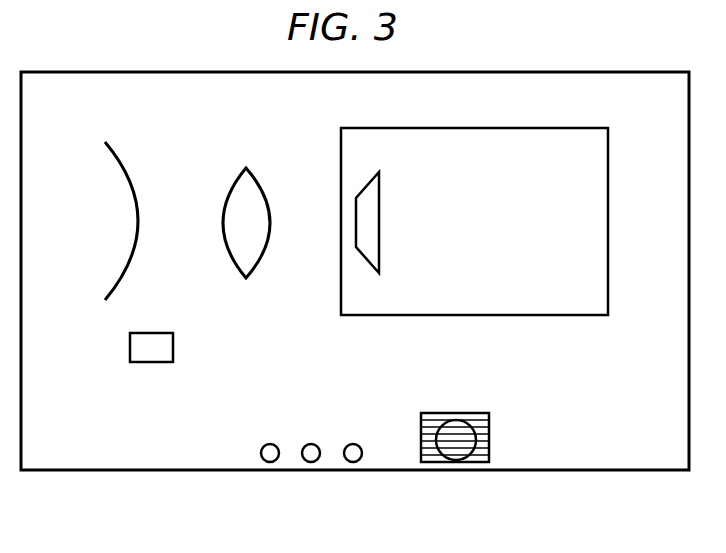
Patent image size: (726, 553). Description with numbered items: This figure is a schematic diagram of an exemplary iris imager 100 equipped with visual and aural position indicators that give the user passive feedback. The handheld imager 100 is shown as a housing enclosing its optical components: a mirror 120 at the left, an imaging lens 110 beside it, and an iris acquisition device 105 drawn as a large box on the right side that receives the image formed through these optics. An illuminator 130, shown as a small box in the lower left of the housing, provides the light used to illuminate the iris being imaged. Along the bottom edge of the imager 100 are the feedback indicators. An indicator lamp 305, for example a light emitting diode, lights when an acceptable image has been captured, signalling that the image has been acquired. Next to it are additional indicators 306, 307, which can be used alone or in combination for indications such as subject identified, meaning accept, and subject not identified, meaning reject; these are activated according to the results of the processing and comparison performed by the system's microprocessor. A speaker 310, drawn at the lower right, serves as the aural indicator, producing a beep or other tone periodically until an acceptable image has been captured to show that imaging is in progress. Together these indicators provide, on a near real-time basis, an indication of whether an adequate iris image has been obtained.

The handheld imager 100 is at (676, 107).
The iris acquisition device 105 is at (603, 307).
The imaging lens 110 is at (262, 185).
The mirror 120 is at (129, 173).
The illuminator 130 is at (152, 362).
The indicator lamp 305 is at (266, 462).
The additional indicator 306 is at (318, 459).
The additional indicator 307 is at (359, 460).
The speaker 310 is at (473, 462).